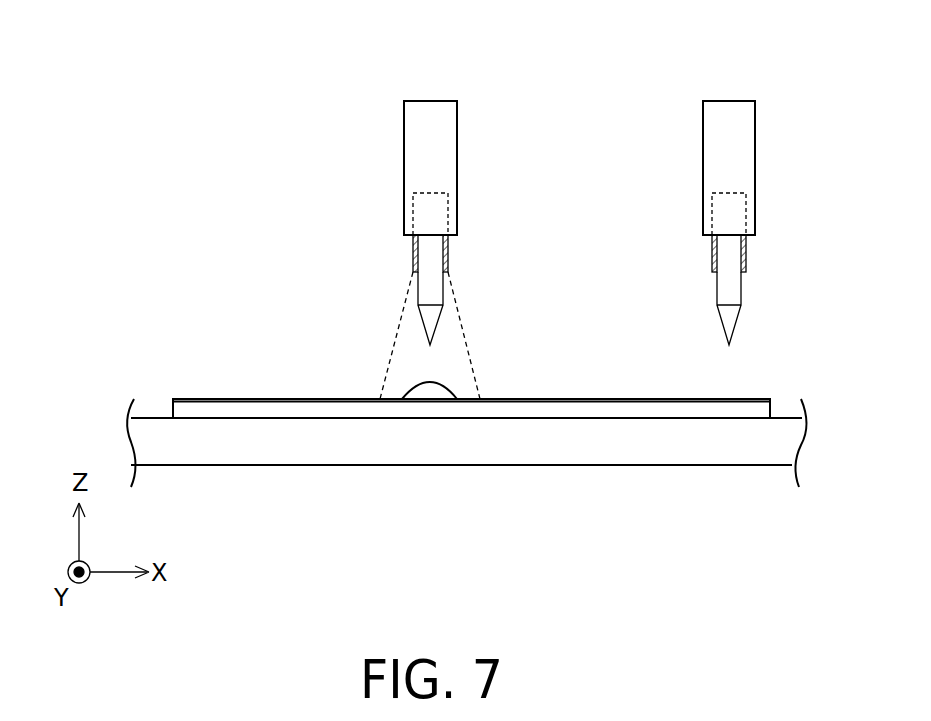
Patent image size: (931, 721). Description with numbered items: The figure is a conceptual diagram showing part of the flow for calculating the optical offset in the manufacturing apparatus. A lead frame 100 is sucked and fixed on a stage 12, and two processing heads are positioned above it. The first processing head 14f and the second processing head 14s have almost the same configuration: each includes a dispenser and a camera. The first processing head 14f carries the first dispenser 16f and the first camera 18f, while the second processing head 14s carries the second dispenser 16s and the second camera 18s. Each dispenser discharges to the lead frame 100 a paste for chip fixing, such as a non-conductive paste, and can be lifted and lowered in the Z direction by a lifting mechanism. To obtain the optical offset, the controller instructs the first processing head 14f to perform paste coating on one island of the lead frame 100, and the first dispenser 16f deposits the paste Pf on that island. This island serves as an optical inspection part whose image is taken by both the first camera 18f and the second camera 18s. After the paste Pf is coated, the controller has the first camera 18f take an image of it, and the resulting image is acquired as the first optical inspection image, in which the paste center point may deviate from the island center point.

The stage 12 is at (268, 467).
The lead frame 100 is at (243, 398).
The first processing head 14f is at (428, 100).
The first camera 18f is at (413, 253).
The first dispenser 16f is at (448, 290).
The paste Pf is at (436, 383).
The second processing head 14s is at (728, 100).
The second camera 18s is at (712, 253).
The second dispenser 16s is at (746, 285).